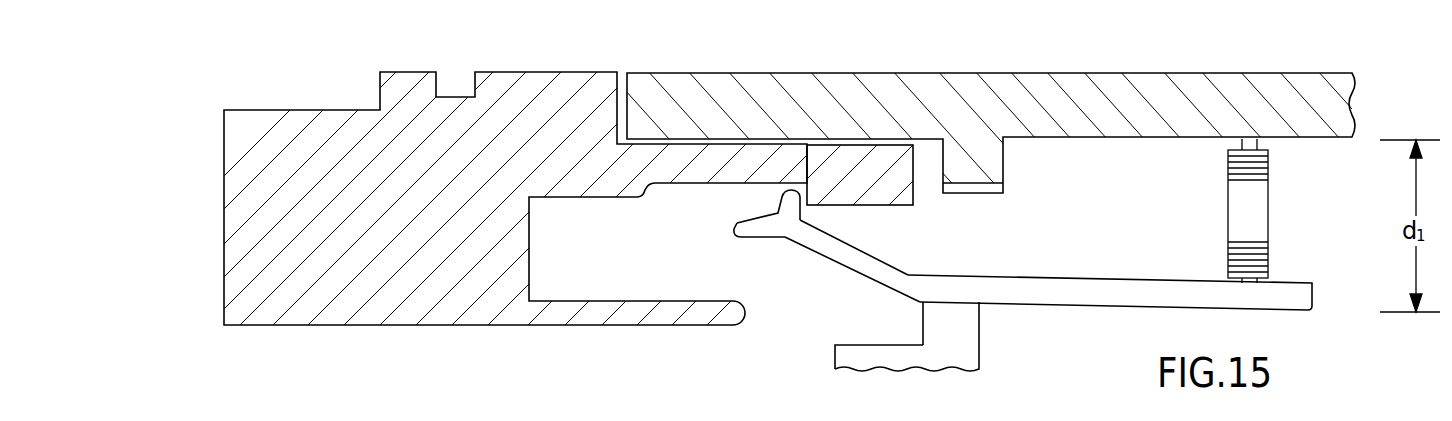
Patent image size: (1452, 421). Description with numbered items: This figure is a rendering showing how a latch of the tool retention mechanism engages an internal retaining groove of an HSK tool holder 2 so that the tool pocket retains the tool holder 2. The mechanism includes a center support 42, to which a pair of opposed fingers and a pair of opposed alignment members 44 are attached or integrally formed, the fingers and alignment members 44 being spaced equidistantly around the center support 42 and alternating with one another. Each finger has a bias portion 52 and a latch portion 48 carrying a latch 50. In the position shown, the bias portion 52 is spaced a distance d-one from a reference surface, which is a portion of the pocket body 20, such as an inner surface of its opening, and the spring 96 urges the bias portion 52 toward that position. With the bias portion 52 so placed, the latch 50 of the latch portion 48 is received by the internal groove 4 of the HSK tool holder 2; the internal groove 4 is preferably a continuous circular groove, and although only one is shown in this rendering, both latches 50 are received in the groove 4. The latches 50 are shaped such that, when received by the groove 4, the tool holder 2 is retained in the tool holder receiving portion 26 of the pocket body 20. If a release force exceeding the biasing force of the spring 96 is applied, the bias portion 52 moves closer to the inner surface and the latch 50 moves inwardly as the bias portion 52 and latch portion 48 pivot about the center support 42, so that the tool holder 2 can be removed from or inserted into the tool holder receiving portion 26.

The HSK tool holder 2 is at (270, 110).
The internal groove 4 is at (717, 185).
The pocket body 20 is at (1270, 85).
The tool holder receiving portion 26 is at (925, 157).
The center support 42 is at (972, 330).
The alignment member 44 is at (873, 348).
The latch portion 48 is at (857, 252).
The latch 50 is at (777, 212).
The bias portion 52 is at (1104, 281).
The spring 96 is at (1268, 217).